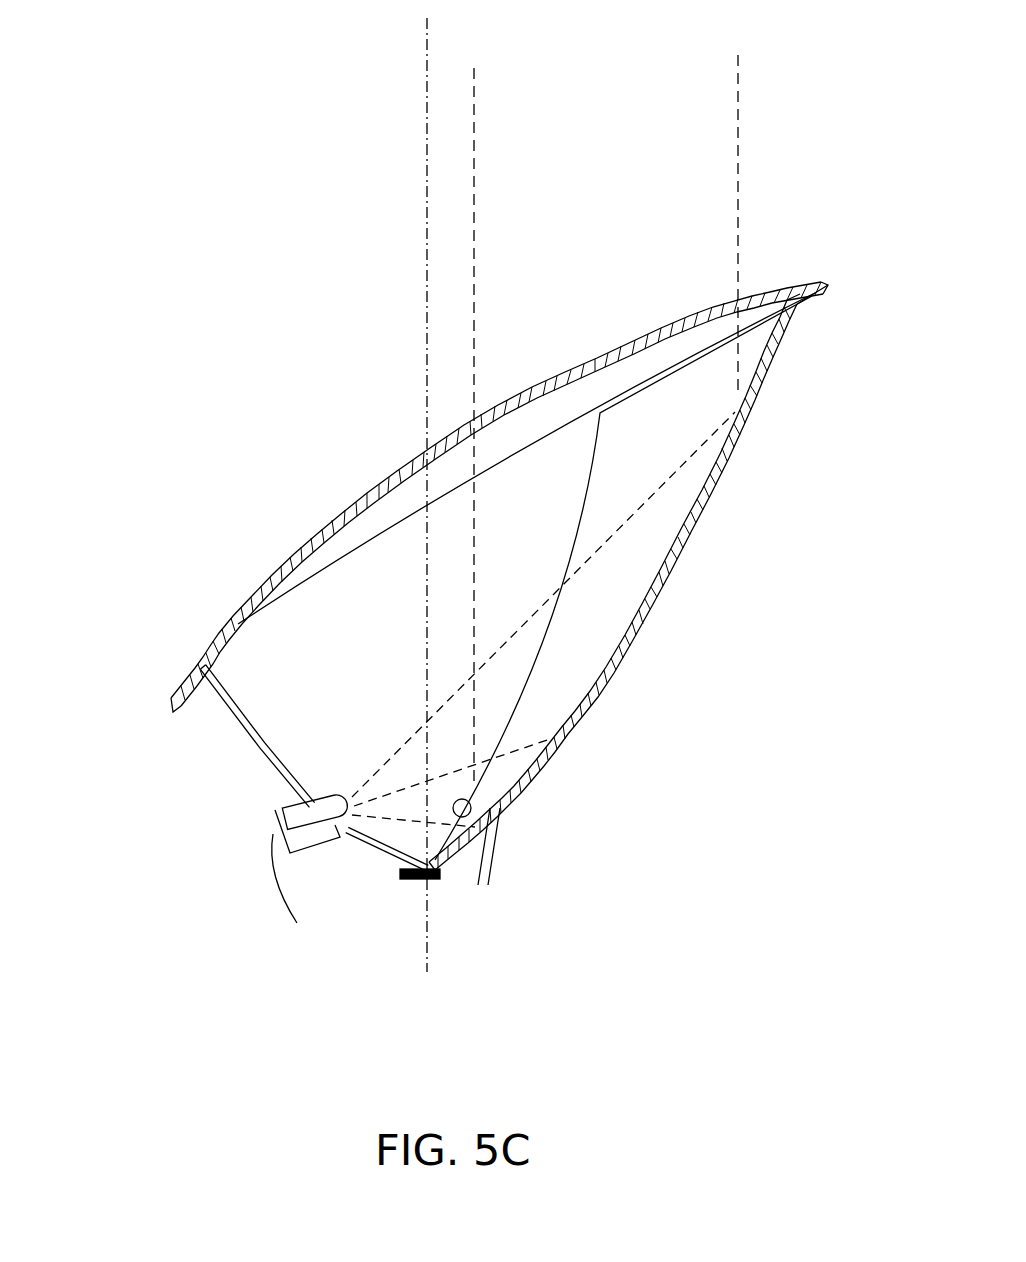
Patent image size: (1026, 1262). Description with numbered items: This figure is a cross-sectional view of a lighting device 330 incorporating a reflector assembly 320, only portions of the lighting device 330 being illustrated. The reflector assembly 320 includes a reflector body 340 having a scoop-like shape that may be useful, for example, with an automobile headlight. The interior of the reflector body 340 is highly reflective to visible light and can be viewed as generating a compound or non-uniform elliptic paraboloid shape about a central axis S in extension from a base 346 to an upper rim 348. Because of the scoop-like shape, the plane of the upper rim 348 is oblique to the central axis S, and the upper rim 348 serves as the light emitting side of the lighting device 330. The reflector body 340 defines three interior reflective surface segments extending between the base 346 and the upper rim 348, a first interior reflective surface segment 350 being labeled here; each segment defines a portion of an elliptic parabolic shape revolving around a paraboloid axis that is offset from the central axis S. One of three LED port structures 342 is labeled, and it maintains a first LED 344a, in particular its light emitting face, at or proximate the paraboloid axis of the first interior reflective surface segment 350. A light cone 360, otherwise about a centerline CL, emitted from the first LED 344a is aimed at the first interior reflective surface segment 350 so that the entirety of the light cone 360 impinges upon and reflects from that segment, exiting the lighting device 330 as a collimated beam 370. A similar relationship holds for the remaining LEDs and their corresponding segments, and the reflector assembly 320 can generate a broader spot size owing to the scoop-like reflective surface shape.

The lighting device 330 is at (138, 118).
The collimated beam 370 is at (474, 213).
The central axis S is at (427, 332).
The upper rim 348 is at (345, 508).
The reflector body 340 is at (763, 377).
The first interior reflective surface segment 350 is at (645, 425).
The reflector assembly 320 is at (776, 470).
The light cone 360 is at (545, 612).
The centerline CL is at (527, 751).
The first LED 344a is at (290, 803).
The LED port structure 342 is at (325, 850).
The base 346 is at (443, 880).